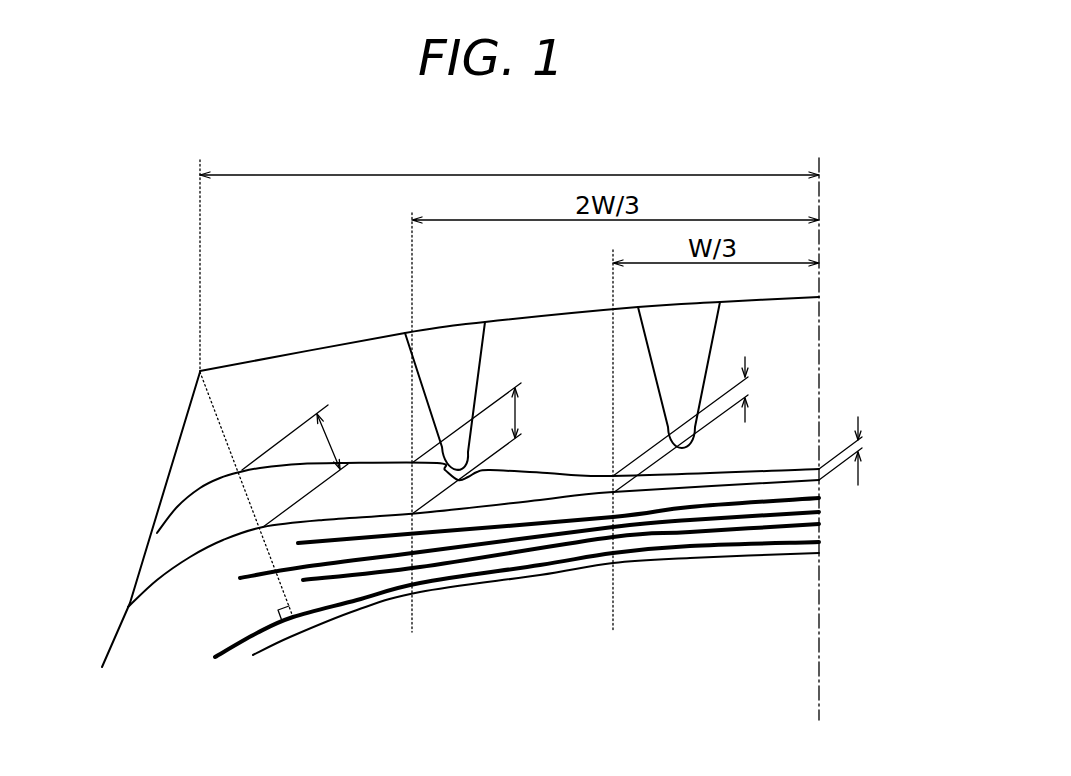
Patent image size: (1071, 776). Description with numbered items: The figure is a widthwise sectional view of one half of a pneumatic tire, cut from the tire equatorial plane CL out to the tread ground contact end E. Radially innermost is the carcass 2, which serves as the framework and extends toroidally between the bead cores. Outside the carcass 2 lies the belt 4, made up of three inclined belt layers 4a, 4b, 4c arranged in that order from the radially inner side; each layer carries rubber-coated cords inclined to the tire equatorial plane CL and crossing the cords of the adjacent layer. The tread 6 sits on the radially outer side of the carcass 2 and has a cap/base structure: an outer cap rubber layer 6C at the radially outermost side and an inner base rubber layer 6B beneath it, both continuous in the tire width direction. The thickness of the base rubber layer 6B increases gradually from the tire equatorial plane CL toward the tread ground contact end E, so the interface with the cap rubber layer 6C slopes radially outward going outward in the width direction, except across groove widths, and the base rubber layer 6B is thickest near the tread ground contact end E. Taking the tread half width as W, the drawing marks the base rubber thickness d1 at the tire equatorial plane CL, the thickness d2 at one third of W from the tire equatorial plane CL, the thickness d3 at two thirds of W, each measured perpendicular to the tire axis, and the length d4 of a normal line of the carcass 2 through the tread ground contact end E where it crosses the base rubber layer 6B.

The carcass 2 is at (366, 596).
The belt 4 is at (573, 613).
The belt layer 4a is at (747, 528).
The belt layer 4b is at (723, 518).
The belt layer 4c is at (701, 510).
The tread 6 is at (780, 297).
The base rubber layer 6B is at (185, 540).
The cap rubber layer 6C is at (198, 467).
The tread ground contact end E is at (200, 372).
The tire equatorial plane CL is at (818, 424).
The tread half width W is at (509, 161).
The thickness of the base rubber layer at the tire equatorial plane d1 is at (859, 451).
The thickness of the base rubber layer at W/3 d2 is at (700, 425).
The thickness of the base rubber layer at 2W/3 d3 is at (482, 448).
The length of a line passing across the base rubber layer d4 is at (304, 466).